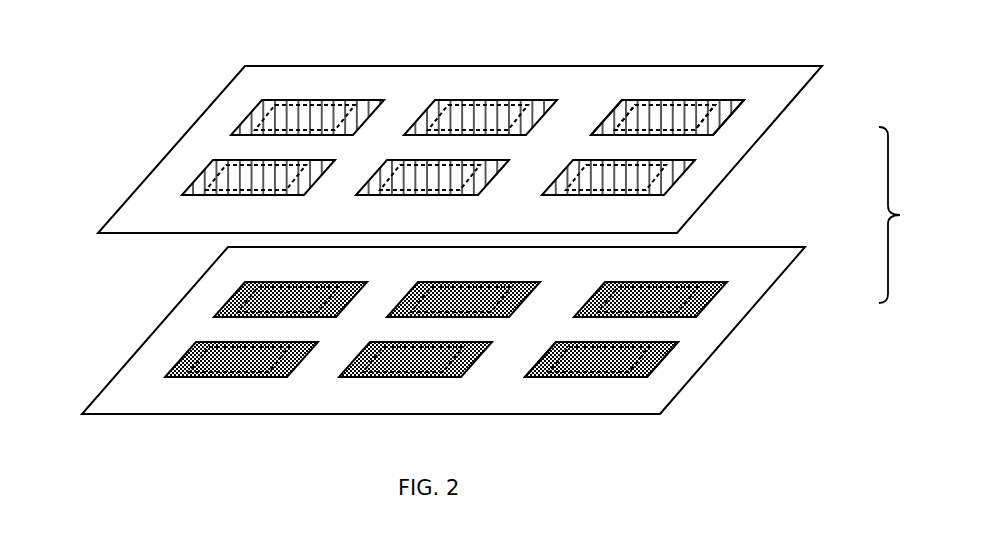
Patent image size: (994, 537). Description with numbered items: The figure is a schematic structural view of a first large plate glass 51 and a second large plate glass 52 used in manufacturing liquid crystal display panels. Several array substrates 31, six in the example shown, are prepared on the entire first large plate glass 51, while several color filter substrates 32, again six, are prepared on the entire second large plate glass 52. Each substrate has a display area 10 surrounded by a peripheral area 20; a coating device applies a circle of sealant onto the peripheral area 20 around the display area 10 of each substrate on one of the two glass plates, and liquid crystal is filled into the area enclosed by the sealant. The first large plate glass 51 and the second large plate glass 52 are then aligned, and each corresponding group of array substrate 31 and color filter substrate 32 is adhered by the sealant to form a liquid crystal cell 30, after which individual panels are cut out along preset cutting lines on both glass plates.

The display area 10 is at (619, 243).
The peripheral area 20 is at (671, 243).
The liquid crystal cell 30 is at (903, 215).
The array substrate 31 is at (712, 296).
The color filter substrate 32 is at (728, 112).
The first large plate glass 51 is at (148, 365).
The second large plate glass 52 is at (170, 182).